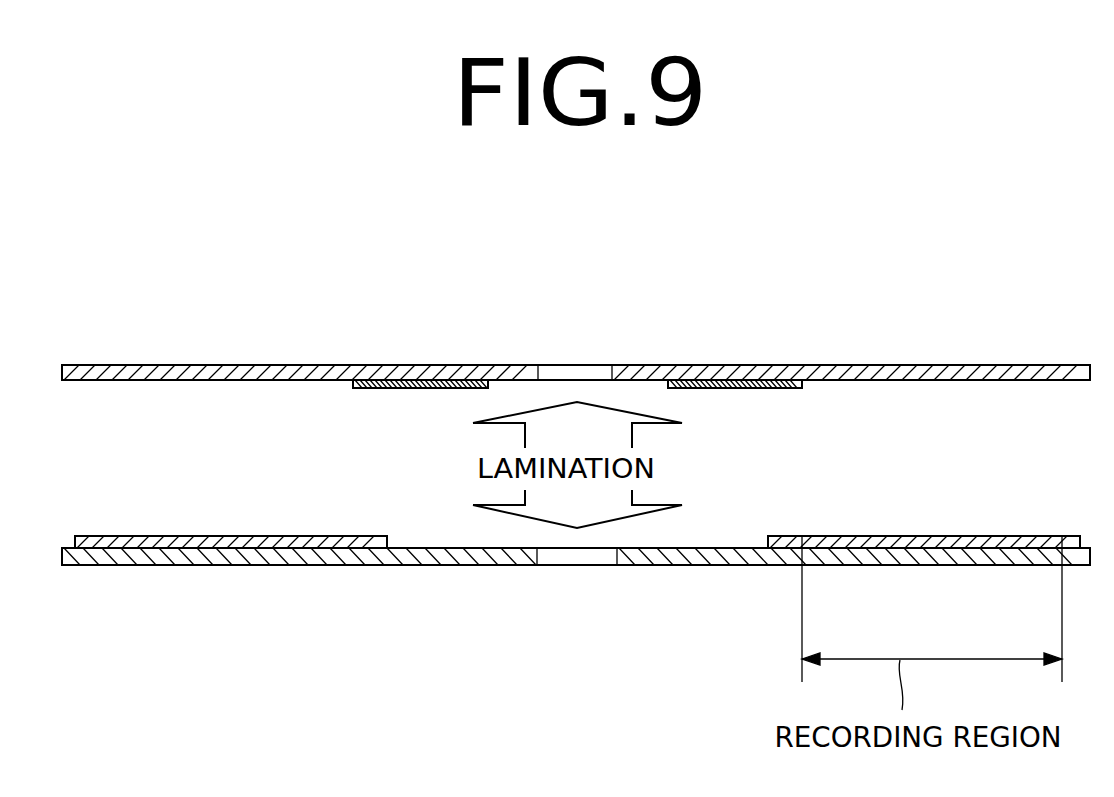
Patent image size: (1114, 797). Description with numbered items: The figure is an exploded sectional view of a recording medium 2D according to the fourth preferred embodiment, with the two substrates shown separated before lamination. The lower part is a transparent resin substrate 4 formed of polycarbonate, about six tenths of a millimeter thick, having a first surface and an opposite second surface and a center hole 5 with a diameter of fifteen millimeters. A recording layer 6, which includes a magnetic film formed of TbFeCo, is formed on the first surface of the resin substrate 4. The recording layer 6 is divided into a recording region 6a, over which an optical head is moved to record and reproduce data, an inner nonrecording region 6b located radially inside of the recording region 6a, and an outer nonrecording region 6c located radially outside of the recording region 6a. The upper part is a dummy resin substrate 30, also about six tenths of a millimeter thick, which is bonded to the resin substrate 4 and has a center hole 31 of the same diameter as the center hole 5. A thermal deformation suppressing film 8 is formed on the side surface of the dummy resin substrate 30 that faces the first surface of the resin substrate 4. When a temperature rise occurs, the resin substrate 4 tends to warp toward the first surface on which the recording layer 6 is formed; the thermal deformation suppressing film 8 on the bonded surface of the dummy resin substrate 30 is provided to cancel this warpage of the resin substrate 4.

The recording medium 2D is at (415, 568).
The resin substrate 4 is at (155, 565).
The center hole 5 is at (613, 565).
The recording layer 6 is at (252, 536).
The recording region 6a is at (947, 536).
The inner nonrecording region 6b is at (780, 536).
The outer nonrecording region 6c is at (1063, 536).
The thermal deformation suppressing film 8 is at (407, 390).
The dummy resin substrate 30 is at (827, 365).
The center hole 31 is at (545, 365).